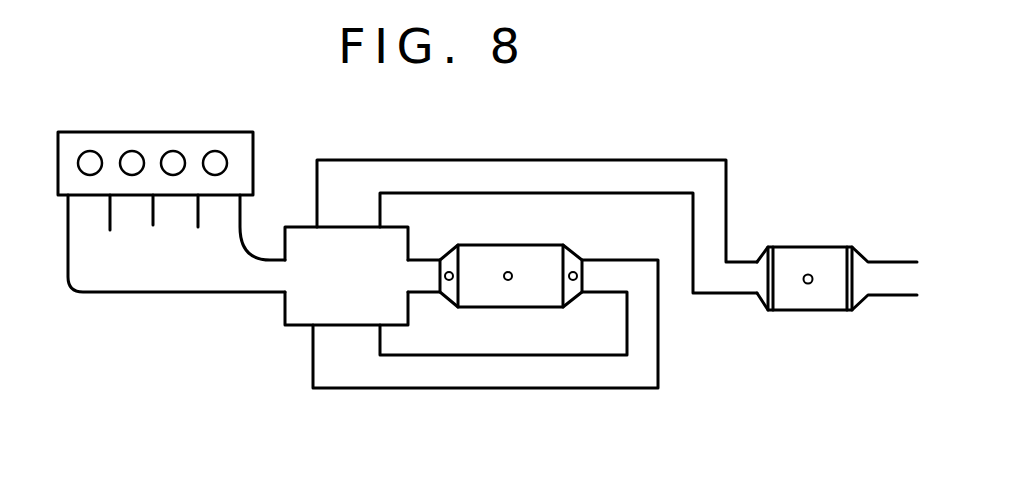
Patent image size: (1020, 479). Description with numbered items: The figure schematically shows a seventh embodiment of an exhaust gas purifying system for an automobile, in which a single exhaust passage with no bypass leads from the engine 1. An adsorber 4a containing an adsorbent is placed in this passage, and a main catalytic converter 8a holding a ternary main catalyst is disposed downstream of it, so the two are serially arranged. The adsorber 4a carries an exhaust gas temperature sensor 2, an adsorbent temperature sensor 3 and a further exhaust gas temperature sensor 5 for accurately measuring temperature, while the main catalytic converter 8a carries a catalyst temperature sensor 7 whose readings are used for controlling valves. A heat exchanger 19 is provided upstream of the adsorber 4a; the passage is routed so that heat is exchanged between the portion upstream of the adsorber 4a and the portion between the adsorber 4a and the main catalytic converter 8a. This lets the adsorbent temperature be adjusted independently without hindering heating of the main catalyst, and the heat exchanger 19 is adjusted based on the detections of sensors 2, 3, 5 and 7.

The engine 1 is at (240, 148).
The heat exchanger 19 is at (297, 308).
The adsorber 4a is at (510, 263).
The exhaust gas temperature sensor 2 is at (447, 280).
The adsorbent temperature sensor 3 is at (508, 280).
The exhaust gas temperature sensor 5 is at (573, 280).
The main catalytic converter 8a is at (808, 257).
The catalyst temperature sensor 7 is at (808, 284).